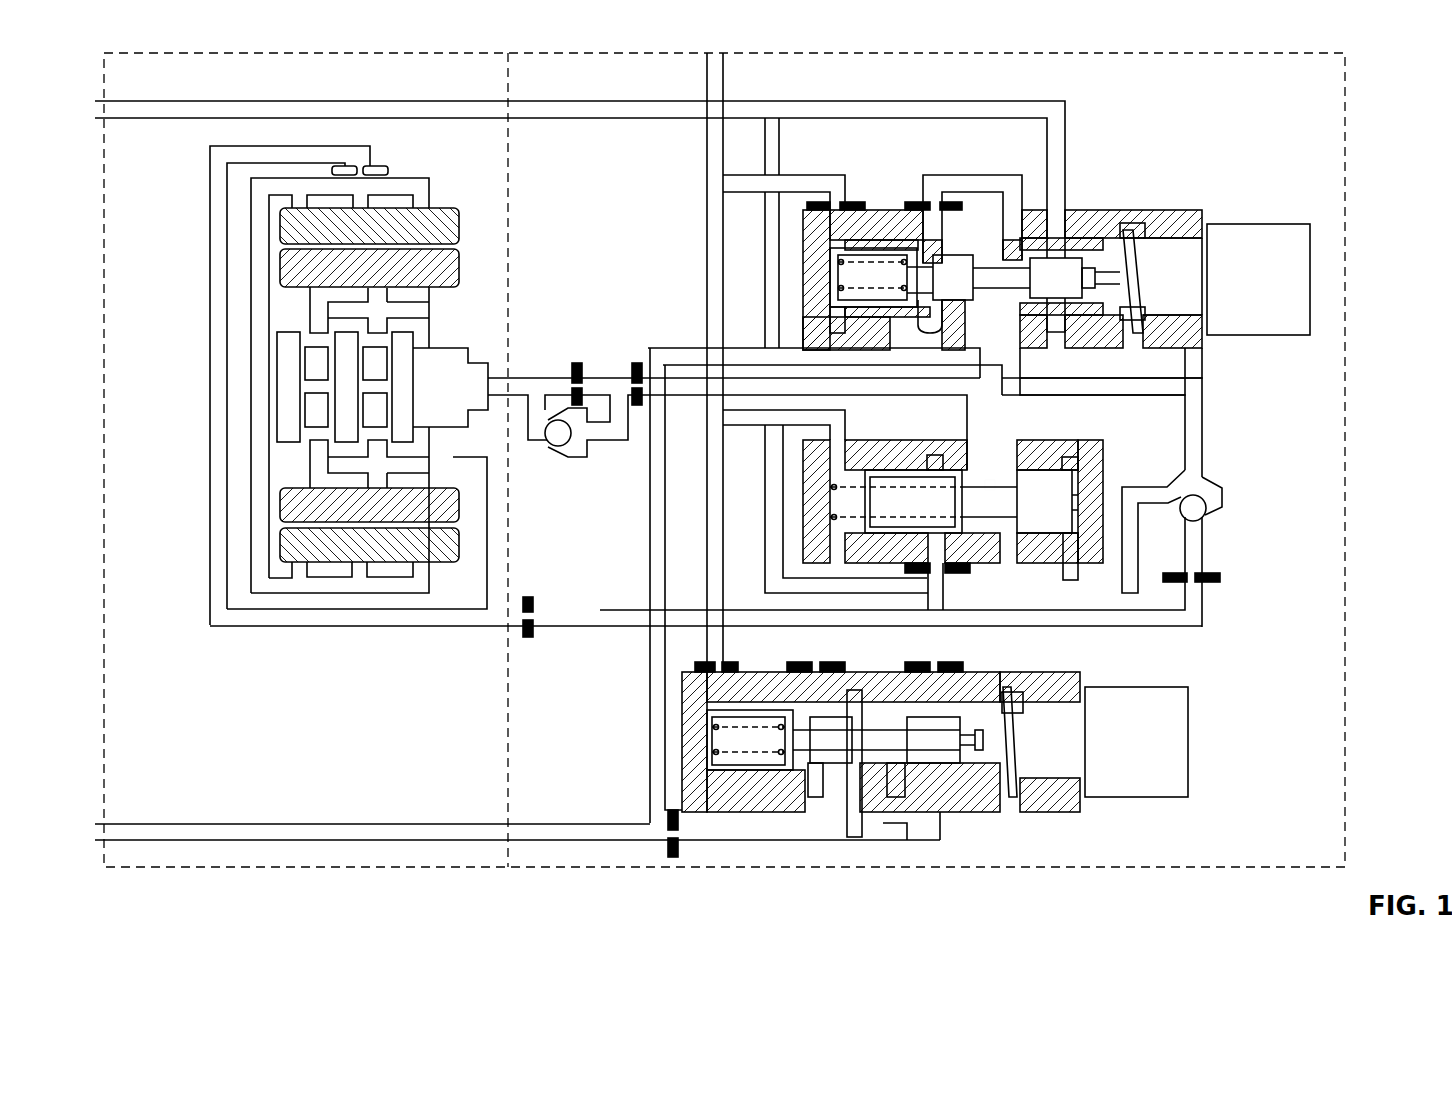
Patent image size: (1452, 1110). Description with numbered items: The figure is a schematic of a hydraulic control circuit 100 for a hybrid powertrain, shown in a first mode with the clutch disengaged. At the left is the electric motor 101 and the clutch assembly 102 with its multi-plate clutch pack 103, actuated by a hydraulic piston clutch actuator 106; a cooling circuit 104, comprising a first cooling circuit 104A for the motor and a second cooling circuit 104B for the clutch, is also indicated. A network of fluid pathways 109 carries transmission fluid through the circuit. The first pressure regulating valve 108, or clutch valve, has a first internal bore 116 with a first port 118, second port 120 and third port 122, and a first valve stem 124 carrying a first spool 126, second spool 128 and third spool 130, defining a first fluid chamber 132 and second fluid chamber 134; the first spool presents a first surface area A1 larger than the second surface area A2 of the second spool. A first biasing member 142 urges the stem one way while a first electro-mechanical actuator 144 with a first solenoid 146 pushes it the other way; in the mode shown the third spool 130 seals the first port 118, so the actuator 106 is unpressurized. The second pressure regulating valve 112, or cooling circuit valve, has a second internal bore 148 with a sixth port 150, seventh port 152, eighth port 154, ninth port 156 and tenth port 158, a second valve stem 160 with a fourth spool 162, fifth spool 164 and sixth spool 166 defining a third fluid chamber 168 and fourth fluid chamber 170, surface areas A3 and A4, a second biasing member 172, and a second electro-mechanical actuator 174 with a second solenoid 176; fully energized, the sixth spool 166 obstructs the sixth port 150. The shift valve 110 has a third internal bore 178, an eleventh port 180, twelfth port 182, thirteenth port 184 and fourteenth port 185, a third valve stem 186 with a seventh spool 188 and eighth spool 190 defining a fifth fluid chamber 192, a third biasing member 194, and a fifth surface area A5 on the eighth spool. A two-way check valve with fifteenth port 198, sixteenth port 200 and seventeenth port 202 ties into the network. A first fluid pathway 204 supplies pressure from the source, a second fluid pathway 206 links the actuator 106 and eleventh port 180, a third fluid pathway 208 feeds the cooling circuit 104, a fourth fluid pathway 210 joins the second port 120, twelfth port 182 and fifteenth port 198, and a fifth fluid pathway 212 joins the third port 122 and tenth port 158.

The hydraulic control circuit 100 is at (1235, 40).
The electric motor 101 is at (465, 240).
The clutch assembly 102 is at (442, 336).
The multi-plate clutch pack 103 is at (345, 388).
The cooling circuit 104 is at (669, 421).
The first cooling circuit 104A is at (402, 168).
The second cooling circuit 104B is at (448, 296).
The clutch actuator 106 is at (492, 378).
The first pressure regulating valve 108 is at (1061, 199).
The network of fluid pathways 109 is at (548, 708).
The shift valve 110 is at (963, 484).
The second pressure regulating valve 112 is at (948, 772).
The first internal bore 116 is at (1172, 262).
The first port 118 is at (1090, 270).
The second port 120 is at (1030, 340).
The third port 122 is at (980, 336).
The first valve stem 124 is at (1060, 275).
The first spool 126 is at (880, 265).
The second spool 128 is at (1003, 240).
The third spool 130 is at (1135, 238).
The first fluid chamber 132 is at (933, 255).
The second fluid chamber 134 is at (1058, 258).
The first biasing member 142 is at (818, 208).
The first electro-mechanical actuator 144 is at (1170, 270).
The first solenoid 146 is at (1303, 320).
The second internal bore 148 is at (1015, 692).
The sixth port 150 is at (945, 672).
The seventh port 152 is at (898, 672).
The eighth port 154 is at (820, 672).
The ninth port 156 is at (955, 800).
The tenth port 158 is at (885, 800).
The second valve stem 160 is at (950, 790).
The fourth spool 162 is at (750, 755).
The fifth spool 164 is at (830, 740).
The sixth spool 166 is at (1040, 800).
The third fluid chamber 168 is at (800, 765).
The fourth fluid chamber 170 is at (940, 810).
The second biasing member 172 is at (660, 825).
The second electro-mechanical actuator 174 is at (1100, 700).
The second solenoid 176 is at (1170, 795).
The third internal bore 178 is at (935, 540).
The eleventh port 180 is at (970, 436).
The twelfth port 182 is at (1040, 470).
The thirteenth port 184 is at (1070, 580).
The fourteenth port 185 is at (935, 555).
The third valve stem 186 is at (985, 500).
The seventh spool 188 is at (910, 500).
The eighth spool 190 is at (1095, 470).
The fifth fluid chamber 192 is at (990, 487).
The third biasing member 194 is at (830, 515).
The fifteenth port 198 is at (1175, 435).
The sixteenth port 200 is at (1200, 560).
The seventeenth port 202 is at (1155, 487).
The first fluid pathway 204 is at (567, 105).
The second fluid pathway 206 is at (530, 398).
The third fluid pathway 208 is at (598, 603).
The fourth fluid pathway 210 is at (1103, 380).
The fifth fluid pathway 212 is at (485, 822).
The first surface area A1 is at (925, 320).
The second surface area A2 is at (905, 292).
The third surface area A3 is at (760, 700).
The fourth surface area A4 is at (790, 730).
The fifth surface area A5 is at (1045, 500).